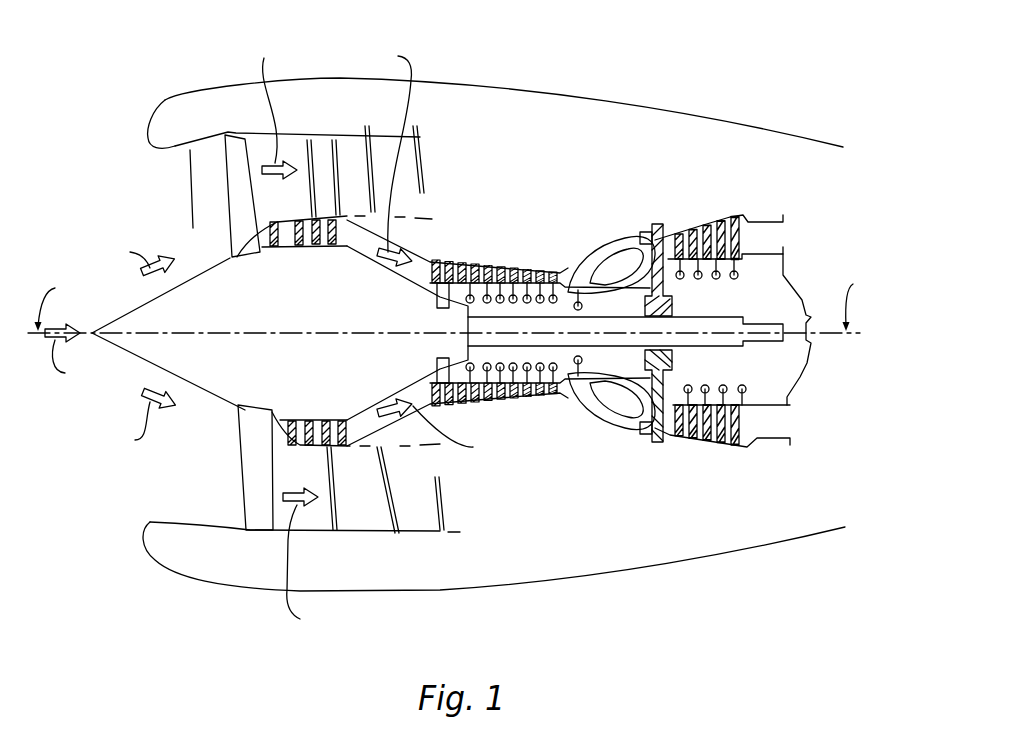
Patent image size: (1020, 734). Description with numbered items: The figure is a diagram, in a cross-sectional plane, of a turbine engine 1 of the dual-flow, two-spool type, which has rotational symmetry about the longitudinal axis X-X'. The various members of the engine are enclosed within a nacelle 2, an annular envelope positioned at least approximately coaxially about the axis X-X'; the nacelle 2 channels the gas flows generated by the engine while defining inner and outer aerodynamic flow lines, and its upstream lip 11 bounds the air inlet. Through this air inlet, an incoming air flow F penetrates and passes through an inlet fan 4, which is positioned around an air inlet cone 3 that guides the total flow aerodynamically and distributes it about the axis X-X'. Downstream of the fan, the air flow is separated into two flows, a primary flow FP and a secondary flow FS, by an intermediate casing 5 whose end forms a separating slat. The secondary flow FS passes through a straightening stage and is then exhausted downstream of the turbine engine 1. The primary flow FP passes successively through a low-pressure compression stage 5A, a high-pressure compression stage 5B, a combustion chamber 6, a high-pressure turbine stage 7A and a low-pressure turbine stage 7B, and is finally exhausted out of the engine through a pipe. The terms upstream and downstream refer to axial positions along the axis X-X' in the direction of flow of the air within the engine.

The turbine engine 1 is at (545, 60).
The nacelle 2 is at (658, 130).
The air inlet lip of the nacelle 11 is at (152, 137).
The air inlet cone 3 is at (133, 358).
The inlet fan 4 is at (256, 533).
The intermediate casing 5 is at (456, 405).
The low-pressure compression stage 5A is at (342, 450).
The high-pressure compression stage 5B is at (528, 398).
The combustion chamber 6 is at (617, 430).
The high-pressure turbine stage 7A is at (667, 440).
The low-pressure turbine stage 7B is at (703, 452).